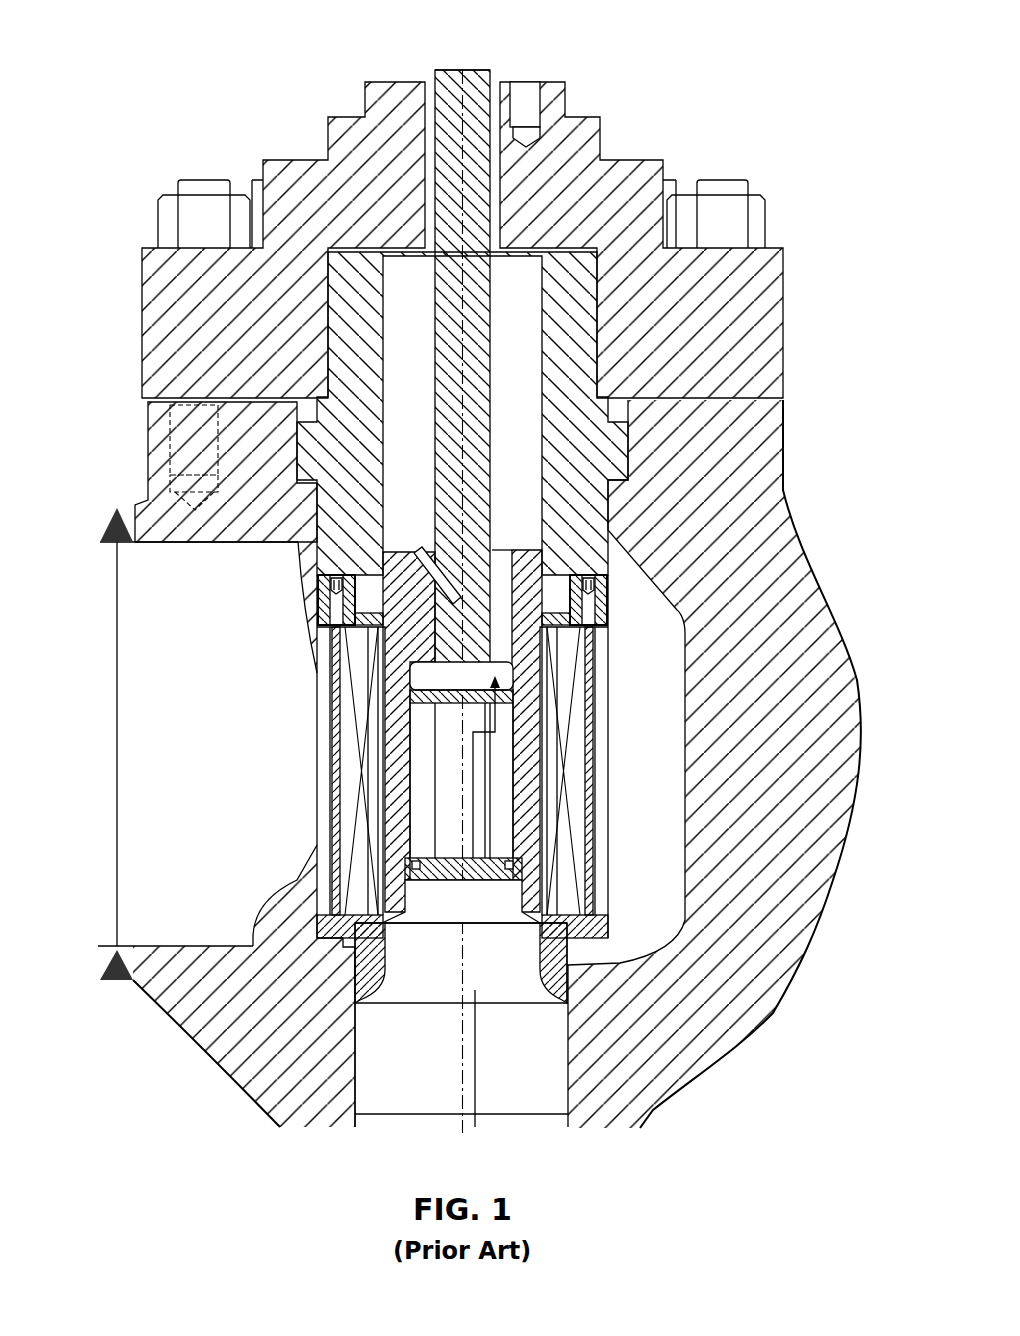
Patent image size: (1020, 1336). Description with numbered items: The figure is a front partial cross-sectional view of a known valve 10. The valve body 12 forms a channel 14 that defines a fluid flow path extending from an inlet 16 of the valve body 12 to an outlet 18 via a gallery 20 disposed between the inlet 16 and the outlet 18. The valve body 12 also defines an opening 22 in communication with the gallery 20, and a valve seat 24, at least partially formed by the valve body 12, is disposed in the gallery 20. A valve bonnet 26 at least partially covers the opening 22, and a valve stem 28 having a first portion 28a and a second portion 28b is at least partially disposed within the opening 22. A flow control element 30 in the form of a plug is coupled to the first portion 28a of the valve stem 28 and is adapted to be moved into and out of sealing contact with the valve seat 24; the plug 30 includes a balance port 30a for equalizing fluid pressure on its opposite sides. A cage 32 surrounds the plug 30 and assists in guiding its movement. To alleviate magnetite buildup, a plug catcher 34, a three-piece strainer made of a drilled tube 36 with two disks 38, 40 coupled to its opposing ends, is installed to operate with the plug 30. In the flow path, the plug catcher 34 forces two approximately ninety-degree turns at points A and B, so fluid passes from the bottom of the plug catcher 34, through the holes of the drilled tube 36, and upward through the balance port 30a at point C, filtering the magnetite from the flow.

The valve 10 is at (104, 345).
The valve body 12 is at (775, 542).
The channel 14 is at (182, 782).
The inlet 16 is at (540, 1132).
The outlet 18 is at (96, 920).
The gallery 20 is at (656, 782).
The opening 22 is at (630, 403).
The valve seat 24 is at (553, 980).
The valve bonnet 26 is at (755, 293).
The valve stem 28 is at (477, 90).
The first portion of the valve stem 28a is at (444, 634).
The second portion of the valve stem 28b is at (447, 64).
The flow control element 30 is at (420, 680).
The balance port 30a is at (545, 608).
The cage 32 is at (572, 838).
The plug catcher 34 is at (425, 810).
The drilled tube 36 is at (433, 740).
The disk 38 is at (518, 877).
The disk 40 is at (510, 695).